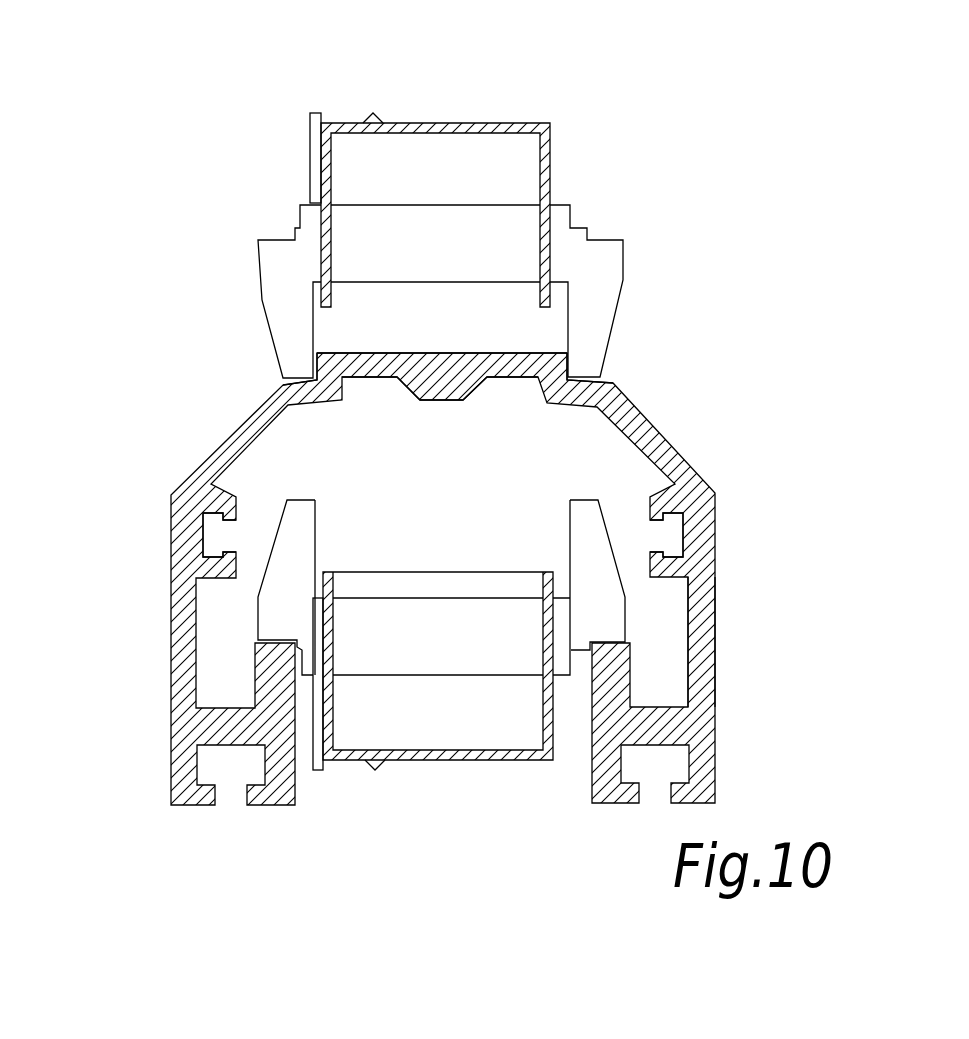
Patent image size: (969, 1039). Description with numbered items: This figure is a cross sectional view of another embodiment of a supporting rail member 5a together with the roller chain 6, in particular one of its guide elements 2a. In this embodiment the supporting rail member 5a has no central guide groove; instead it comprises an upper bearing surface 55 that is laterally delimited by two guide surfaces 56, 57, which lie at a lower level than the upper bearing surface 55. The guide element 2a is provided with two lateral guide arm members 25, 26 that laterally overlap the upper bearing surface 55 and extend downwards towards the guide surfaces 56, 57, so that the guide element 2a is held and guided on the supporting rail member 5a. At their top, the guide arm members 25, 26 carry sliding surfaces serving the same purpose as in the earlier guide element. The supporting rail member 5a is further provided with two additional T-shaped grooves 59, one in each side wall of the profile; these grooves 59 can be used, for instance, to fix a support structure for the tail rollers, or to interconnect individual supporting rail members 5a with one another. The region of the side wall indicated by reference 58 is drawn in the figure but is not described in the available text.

The roller chain 6 is at (572, 105).
The guide element 2a is at (422, 218).
The upper bearing surface 55 is at (417, 352).
The guide arm member 26 is at (285, 337).
The guide arm member 25 is at (592, 337).
The guide surface 57 is at (263, 378).
The guide surface 56 is at (622, 378).
The supporting rail member 5a is at (657, 450).
The T-shaped groove 59 is at (213, 538).
The side wall web 58 is at (662, 570).